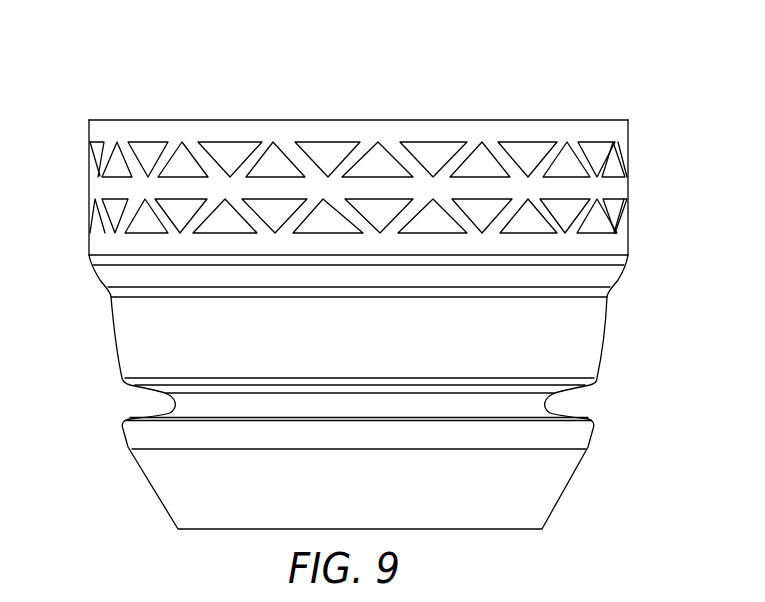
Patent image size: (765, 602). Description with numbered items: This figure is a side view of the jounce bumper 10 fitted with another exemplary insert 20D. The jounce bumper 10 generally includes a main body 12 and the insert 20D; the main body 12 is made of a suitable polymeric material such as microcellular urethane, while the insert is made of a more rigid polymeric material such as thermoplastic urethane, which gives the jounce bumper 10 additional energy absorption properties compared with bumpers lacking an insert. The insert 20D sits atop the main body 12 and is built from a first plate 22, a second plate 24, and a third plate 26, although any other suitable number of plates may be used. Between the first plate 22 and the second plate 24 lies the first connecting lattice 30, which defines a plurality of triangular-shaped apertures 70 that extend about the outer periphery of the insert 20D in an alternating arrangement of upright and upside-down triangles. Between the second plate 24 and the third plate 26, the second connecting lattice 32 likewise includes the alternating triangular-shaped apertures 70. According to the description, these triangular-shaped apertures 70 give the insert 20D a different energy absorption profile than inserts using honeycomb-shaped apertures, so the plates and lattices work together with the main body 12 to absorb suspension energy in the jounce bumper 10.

The jounce bumper 10 is at (183, 74).
The main body 12 is at (140, 330).
The insert 20D is at (89, 133).
The first plate 22 is at (615, 131).
The second plate 24 is at (615, 187).
The third plate 26 is at (620, 243).
The first connecting lattice 30 is at (97, 167).
The second connecting lattice 32 is at (97, 221).
The triangular-shaped apertures 70 is at (332, 150).